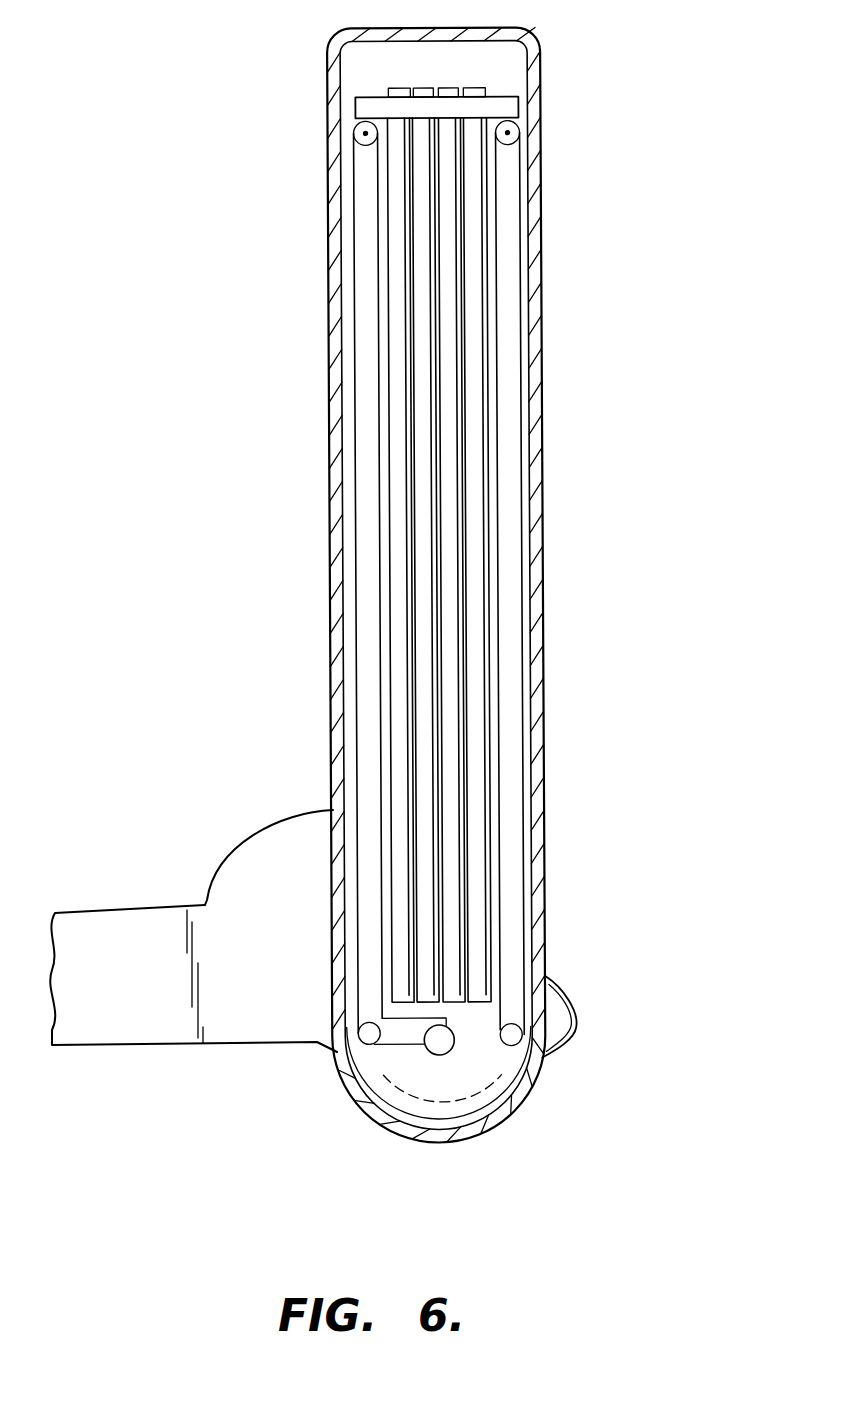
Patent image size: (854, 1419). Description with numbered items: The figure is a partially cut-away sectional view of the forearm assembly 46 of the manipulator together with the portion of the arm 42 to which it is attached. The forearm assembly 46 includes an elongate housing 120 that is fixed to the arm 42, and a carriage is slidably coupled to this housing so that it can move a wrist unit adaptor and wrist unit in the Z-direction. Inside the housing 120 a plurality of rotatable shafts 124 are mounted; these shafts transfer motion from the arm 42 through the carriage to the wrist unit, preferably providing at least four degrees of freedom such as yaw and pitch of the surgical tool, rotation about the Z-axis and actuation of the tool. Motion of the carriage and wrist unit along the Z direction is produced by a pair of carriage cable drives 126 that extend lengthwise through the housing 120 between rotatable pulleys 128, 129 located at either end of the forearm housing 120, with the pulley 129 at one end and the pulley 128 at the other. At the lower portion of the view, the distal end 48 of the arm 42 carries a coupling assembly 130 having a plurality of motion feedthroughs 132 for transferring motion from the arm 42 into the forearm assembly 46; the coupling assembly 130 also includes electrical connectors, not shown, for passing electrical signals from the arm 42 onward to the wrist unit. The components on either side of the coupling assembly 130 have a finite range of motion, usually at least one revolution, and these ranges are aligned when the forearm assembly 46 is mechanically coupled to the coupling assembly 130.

The arm 42 is at (105, 1005).
The forearm assembly 46 is at (624, 141).
The distal end of arm 48 is at (270, 832).
The housing 120 is at (555, 443).
The rotatable shafts 124 is at (480, 713).
The carriage cable drives 126 is at (520, 642).
The rotatable pulley 128 is at (520, 1050).
The rotatable pulley 129 is at (511, 130).
The coupling assembly 130 is at (210, 1153).
The motion feedthroughs 132 is at (392, 1055).